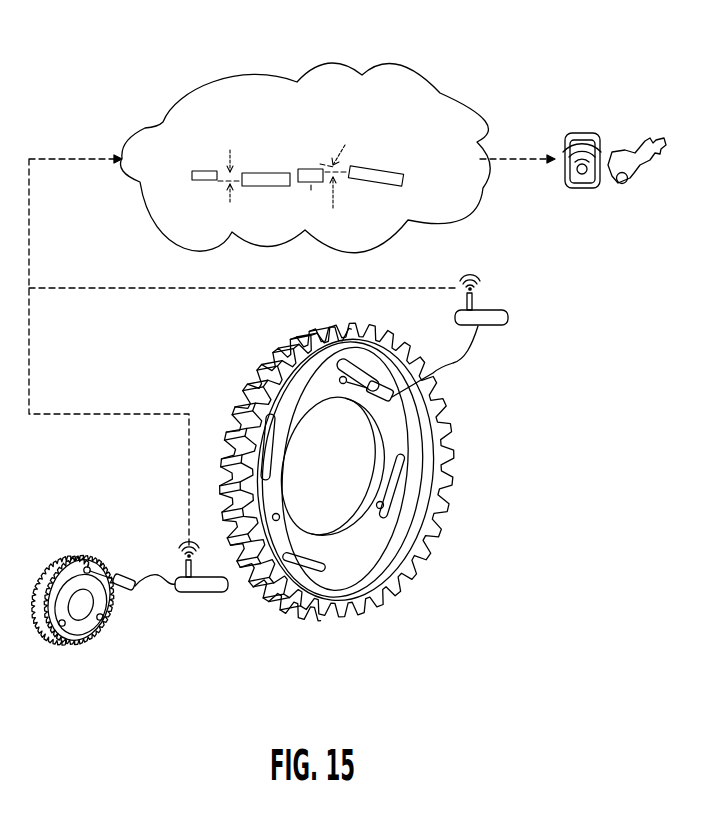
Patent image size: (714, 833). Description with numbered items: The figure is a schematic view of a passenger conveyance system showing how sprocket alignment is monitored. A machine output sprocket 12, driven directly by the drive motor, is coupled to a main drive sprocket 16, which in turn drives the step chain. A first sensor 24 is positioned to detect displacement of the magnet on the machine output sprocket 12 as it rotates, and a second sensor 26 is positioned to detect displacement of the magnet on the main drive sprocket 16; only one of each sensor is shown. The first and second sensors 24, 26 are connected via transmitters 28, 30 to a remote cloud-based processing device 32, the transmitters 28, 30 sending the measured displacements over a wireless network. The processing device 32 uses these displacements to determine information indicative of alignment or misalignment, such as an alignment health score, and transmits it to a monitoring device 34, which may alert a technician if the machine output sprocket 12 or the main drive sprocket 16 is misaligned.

The machine output sprocket 12 is at (68, 648).
The main drive sprocket 16 is at (403, 520).
The first sensor 24 is at (125, 588).
The second sensor 26 is at (393, 397).
The transmitter 28 is at (218, 592).
The transmitter 30 is at (500, 327).
The remote cloud-based processing device 32 is at (328, 64).
The monitoring device 34 is at (585, 132).